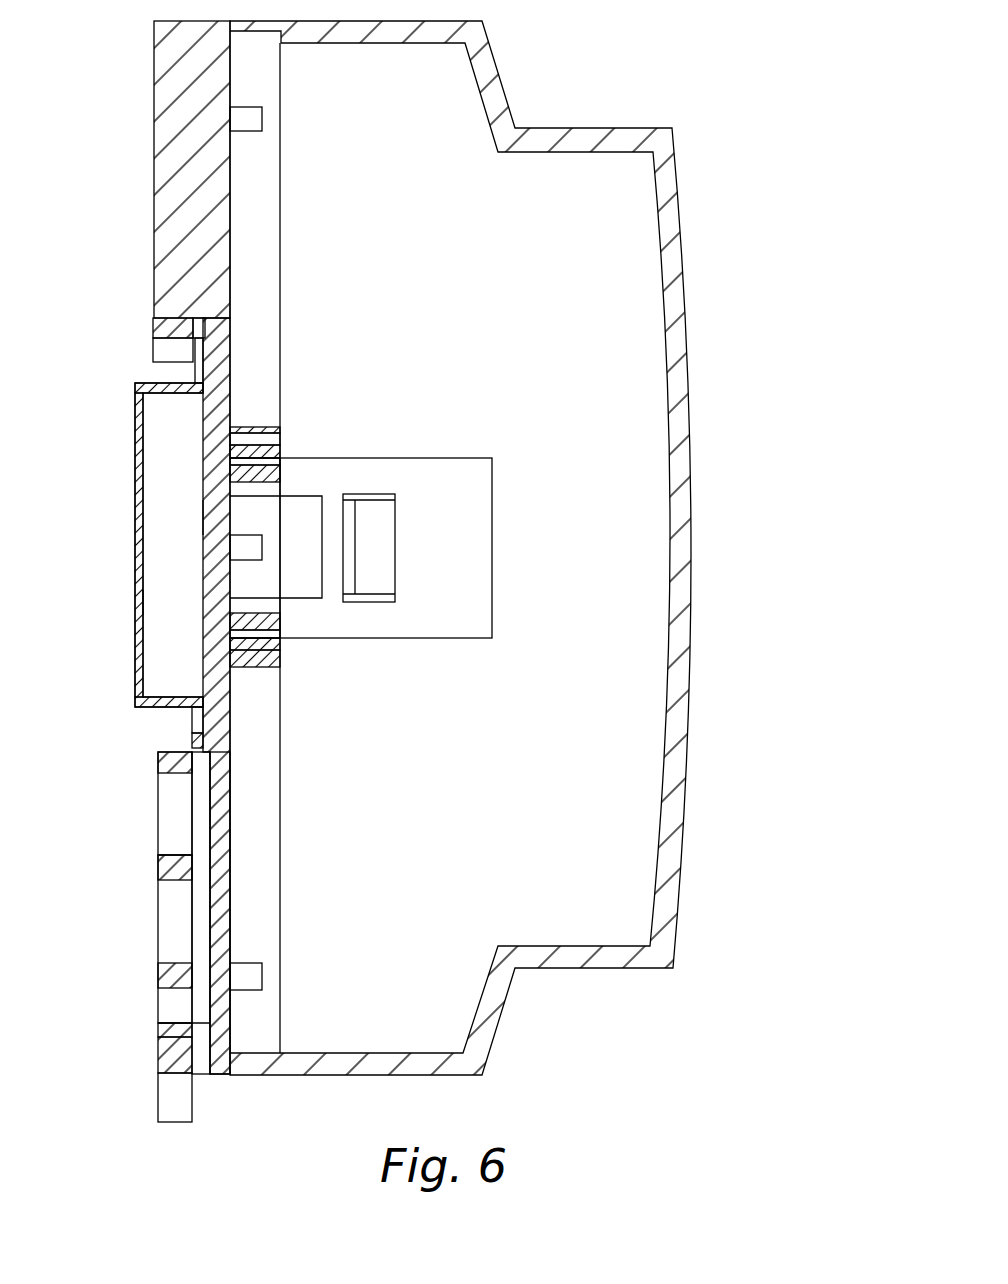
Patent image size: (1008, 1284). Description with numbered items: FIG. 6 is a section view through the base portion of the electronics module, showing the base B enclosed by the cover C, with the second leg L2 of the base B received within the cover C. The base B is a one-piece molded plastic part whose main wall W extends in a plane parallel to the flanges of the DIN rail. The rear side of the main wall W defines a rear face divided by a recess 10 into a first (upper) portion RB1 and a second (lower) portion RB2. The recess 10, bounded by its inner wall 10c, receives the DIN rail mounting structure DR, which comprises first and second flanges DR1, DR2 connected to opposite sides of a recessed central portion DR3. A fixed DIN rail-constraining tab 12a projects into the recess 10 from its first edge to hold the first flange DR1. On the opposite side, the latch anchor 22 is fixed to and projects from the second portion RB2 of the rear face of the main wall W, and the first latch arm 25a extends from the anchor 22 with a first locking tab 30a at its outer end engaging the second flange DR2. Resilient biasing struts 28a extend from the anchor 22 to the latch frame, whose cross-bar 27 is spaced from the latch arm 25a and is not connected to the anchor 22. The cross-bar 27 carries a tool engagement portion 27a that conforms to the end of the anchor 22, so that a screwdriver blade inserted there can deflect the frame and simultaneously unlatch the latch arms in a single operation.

The cover C is at (688, 362).
The first (upper) portion of the rear face RB1 is at (185, 113).
The base B is at (255, 243).
The main wall W is at (220, 718).
The second (lower) portion of the rear face RB2 is at (214, 930).
The fixed DIN rail-constraining tab 12a is at (160, 350).
The DIN rail mounting structure DR is at (136, 660).
The first flange DR1 is at (185, 373).
The second flange DR2 is at (200, 710).
The recessed central portion DR3 is at (161, 575).
The inner wall or face of the recess 10c is at (203, 518).
The recess 10 is at (184, 600).
The first locking tab 30a is at (178, 740).
The anchor 22 is at (205, 828).
The first latch arm 25a is at (178, 775).
The biasing struts 28a is at (176, 873).
The cross-bar 27 is at (175, 1030).
The tool engagement portion 27a is at (163, 1108).
The second leg L2 is at (447, 618).